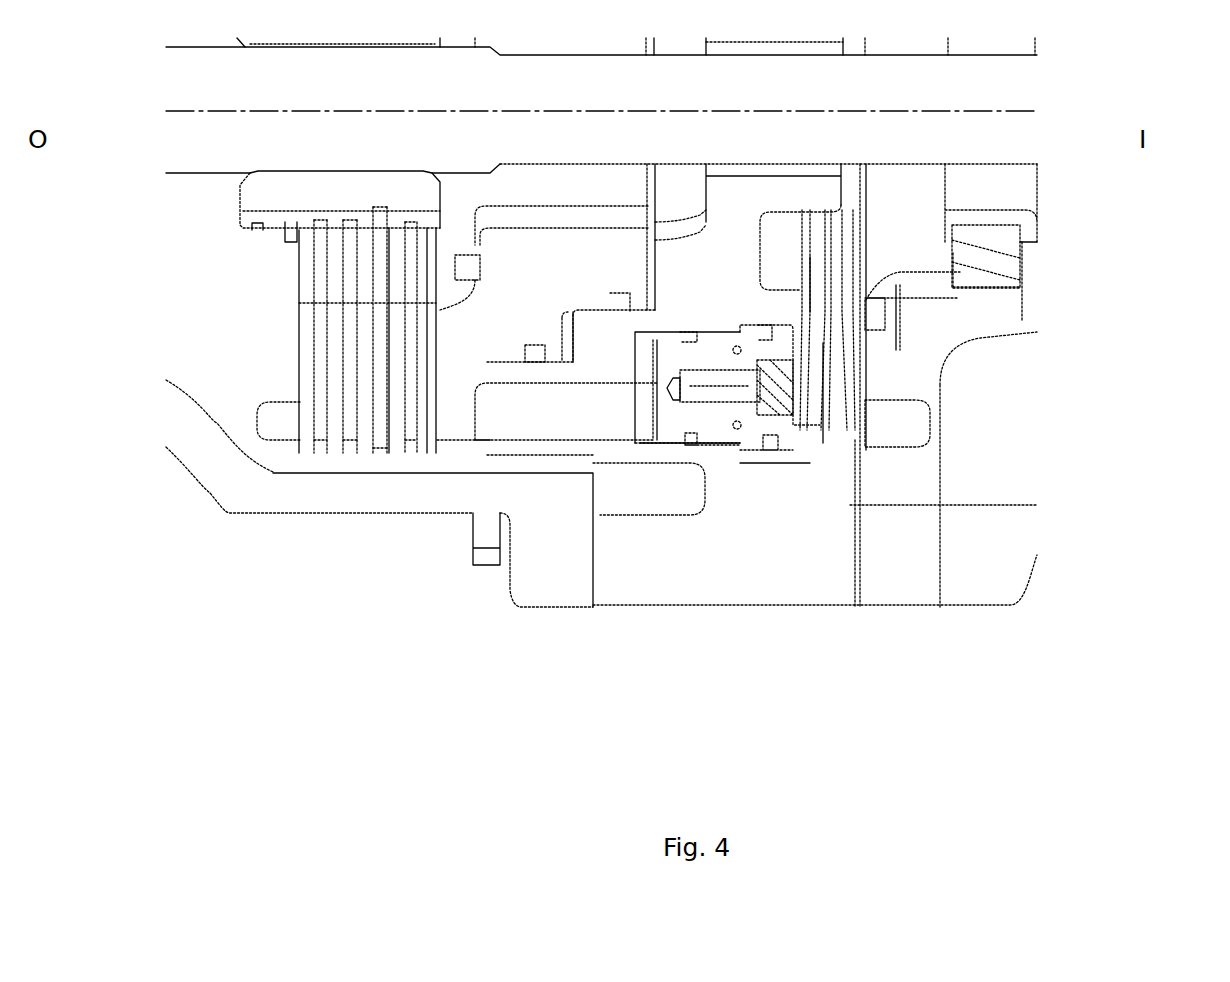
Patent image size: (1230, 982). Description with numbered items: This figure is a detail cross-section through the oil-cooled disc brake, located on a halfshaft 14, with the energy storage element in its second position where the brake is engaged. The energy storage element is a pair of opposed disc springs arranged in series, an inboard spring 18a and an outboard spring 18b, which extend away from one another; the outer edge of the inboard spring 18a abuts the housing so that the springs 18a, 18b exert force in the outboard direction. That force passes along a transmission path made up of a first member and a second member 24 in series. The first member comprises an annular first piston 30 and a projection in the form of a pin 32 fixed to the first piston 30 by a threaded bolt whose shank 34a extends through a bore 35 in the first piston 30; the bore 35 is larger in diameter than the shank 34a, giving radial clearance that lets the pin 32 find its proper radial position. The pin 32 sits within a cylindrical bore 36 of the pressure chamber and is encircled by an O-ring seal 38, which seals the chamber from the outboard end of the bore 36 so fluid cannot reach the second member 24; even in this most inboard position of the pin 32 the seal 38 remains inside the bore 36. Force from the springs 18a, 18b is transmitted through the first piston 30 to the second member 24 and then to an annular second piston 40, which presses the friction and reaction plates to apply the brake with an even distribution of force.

The halfshaft 14 is at (970, 137).
The second piston 40 is at (448, 412).
The second member 24 is at (573, 425).
The cylindrical bore 36 is at (645, 443).
The O-ring seal 38 is at (693, 443).
The pin 32 is at (718, 422).
The shank 34a is at (757, 400).
The bore 35 is at (745, 368).
The first piston 30 is at (782, 438).
The inboard spring 18a is at (848, 377).
The outboard spring 18b is at (813, 387).